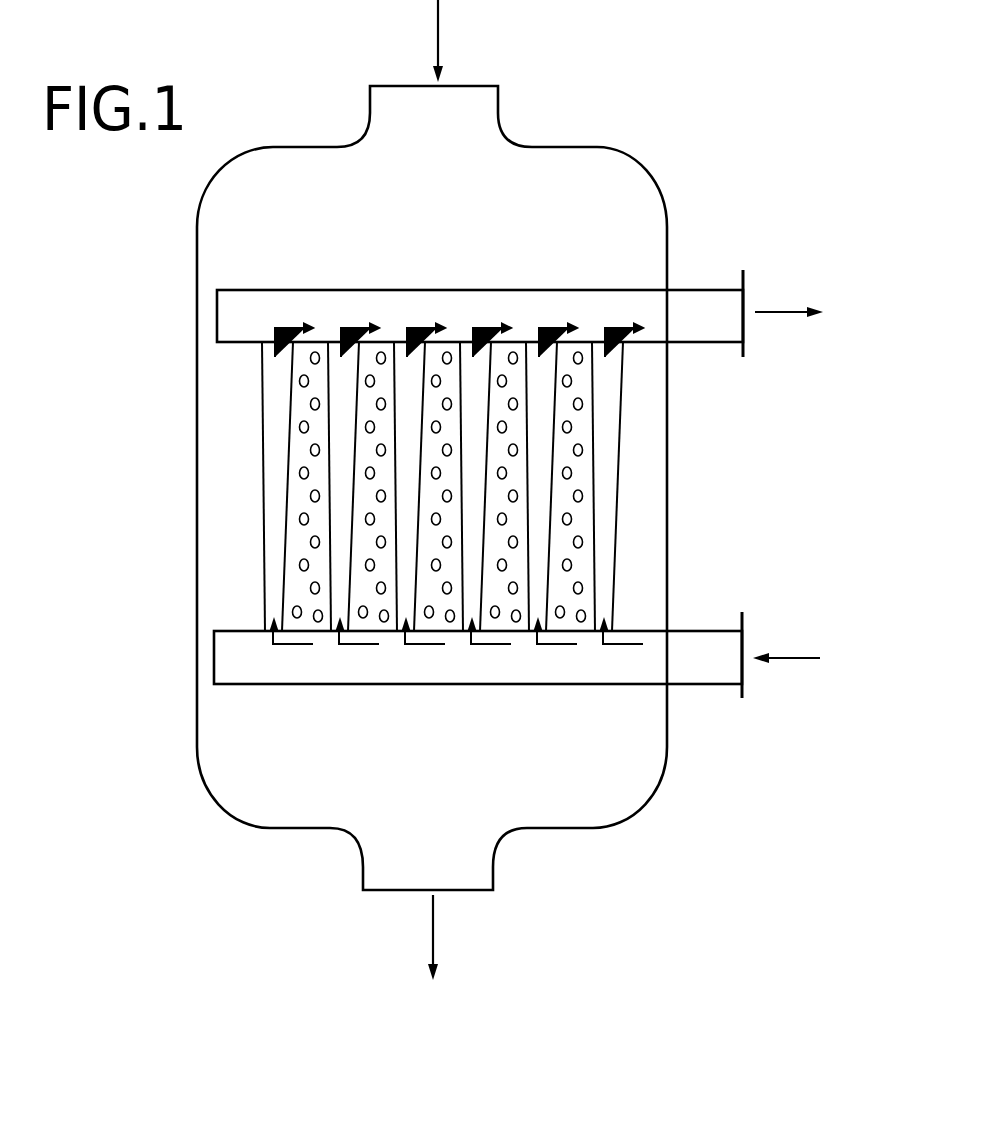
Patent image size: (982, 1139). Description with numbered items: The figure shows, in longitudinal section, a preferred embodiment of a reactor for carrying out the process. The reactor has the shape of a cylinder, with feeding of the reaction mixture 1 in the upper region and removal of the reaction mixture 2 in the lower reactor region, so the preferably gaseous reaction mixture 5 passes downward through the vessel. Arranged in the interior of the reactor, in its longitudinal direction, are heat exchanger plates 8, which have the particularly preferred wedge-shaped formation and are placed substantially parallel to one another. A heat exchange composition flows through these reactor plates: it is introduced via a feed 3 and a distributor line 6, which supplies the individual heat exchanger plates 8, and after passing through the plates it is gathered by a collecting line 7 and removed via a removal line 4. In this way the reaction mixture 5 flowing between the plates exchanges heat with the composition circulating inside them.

The feeding of the reaction mixture 1 is at (440, 37).
The removal of the reaction mixture 2 is at (433, 927).
The feed 3 is at (787, 655).
The removal line 4 is at (787, 317).
The reaction mixture 5 is at (575, 563).
The distributor line 6 is at (563, 665).
The collecting line 7 is at (538, 297).
The heat exchanger plates 8 is at (605, 408).